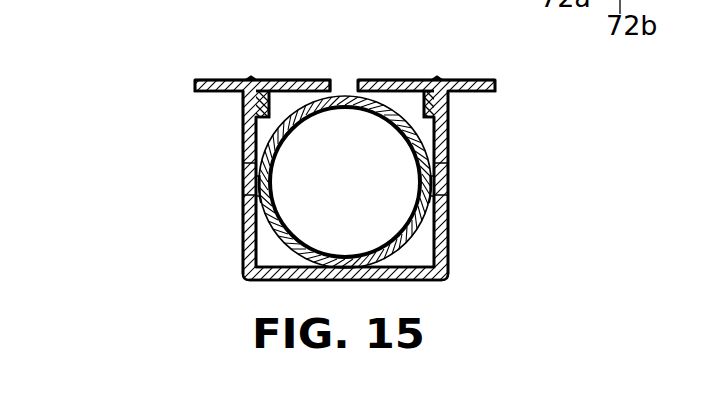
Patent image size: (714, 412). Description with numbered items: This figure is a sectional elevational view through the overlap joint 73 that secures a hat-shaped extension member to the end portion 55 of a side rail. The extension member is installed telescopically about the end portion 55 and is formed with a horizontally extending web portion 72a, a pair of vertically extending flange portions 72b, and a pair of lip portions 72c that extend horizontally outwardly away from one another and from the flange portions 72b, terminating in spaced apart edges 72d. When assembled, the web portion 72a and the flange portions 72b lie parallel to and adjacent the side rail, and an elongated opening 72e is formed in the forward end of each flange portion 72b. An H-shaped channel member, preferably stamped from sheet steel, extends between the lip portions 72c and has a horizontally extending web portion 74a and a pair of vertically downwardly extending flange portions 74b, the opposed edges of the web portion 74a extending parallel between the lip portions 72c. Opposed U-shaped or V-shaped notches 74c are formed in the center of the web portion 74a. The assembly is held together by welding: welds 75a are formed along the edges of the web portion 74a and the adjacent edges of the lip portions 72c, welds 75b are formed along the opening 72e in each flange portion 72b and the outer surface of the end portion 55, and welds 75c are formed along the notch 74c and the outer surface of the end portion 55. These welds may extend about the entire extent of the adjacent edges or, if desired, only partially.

The overlap joint 73 is at (132, 58).
The horizontally extending web portion 72a is at (403, 277).
The vertically extending flange portions 72b is at (243, 244).
The lip portions 72c is at (215, 79).
The spaced apart edges 72d is at (194, 91).
The elongated opening 72e is at (246, 177).
The horizontally extending web portion 74a is at (299, 79).
The vertically downwardly extending flange portions 74b is at (432, 113).
The notches 74c is at (344, 78).
The welds 75a is at (252, 78).
The welds 75b is at (243, 188).
The welds 75c is at (354, 84).
The end portion 55 is at (293, 250).